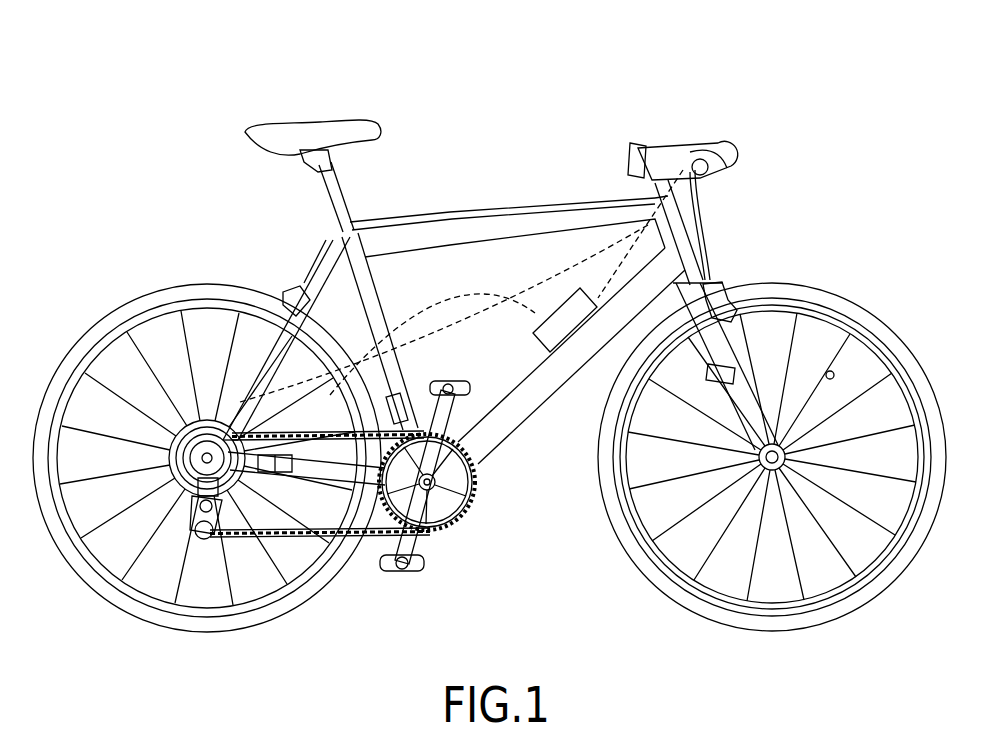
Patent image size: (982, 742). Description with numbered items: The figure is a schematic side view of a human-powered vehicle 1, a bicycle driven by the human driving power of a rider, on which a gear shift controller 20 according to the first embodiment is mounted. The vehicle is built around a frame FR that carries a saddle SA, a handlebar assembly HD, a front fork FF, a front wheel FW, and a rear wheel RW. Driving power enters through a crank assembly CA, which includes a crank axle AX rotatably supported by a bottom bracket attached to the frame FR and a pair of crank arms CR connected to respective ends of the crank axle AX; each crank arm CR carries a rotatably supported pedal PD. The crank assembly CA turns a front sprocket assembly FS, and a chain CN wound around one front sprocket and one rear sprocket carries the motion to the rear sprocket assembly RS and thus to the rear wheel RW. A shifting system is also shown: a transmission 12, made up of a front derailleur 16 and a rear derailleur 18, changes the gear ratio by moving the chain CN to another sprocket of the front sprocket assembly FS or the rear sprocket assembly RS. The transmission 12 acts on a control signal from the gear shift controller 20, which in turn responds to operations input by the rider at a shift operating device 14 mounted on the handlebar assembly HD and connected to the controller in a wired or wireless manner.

The human-powered vehicle 1 is at (819, 71).
The saddle SA is at (322, 119).
The frame FR is at (470, 218).
The handlebar assembly HD is at (668, 141).
The shift operating device 14 is at (713, 142).
The front wheel FW is at (850, 298).
The rear wheel RW is at (97, 326).
The rear sprocket assembly RS is at (188, 426).
The gear shift controller 20 is at (560, 300).
The front derailleur 16 is at (400, 392).
The pedal PD is at (457, 382).
The crank arm CR is at (452, 412).
The front sprocket assembly FS is at (474, 470).
The crank axle AX is at (445, 486).
The front fork FF is at (726, 412).
The crank assembly CA is at (493, 514).
The transmission 12 is at (470, 535).
The chain CN is at (372, 540).
The rear derailleur 18 is at (190, 503).